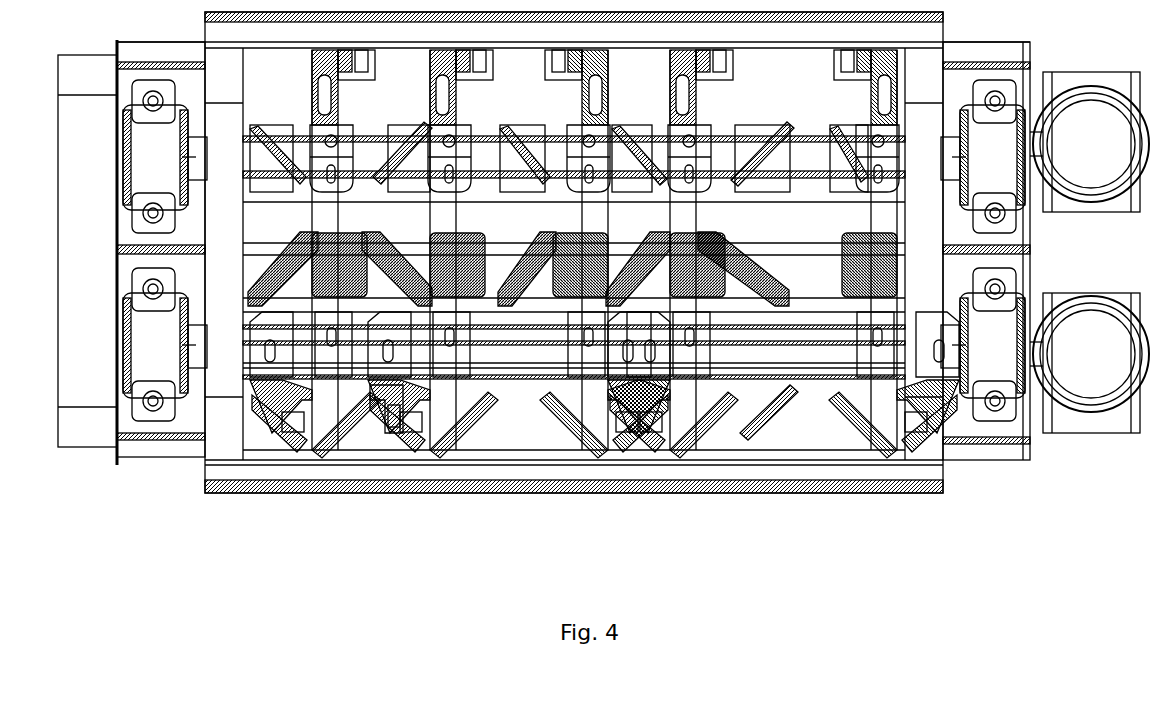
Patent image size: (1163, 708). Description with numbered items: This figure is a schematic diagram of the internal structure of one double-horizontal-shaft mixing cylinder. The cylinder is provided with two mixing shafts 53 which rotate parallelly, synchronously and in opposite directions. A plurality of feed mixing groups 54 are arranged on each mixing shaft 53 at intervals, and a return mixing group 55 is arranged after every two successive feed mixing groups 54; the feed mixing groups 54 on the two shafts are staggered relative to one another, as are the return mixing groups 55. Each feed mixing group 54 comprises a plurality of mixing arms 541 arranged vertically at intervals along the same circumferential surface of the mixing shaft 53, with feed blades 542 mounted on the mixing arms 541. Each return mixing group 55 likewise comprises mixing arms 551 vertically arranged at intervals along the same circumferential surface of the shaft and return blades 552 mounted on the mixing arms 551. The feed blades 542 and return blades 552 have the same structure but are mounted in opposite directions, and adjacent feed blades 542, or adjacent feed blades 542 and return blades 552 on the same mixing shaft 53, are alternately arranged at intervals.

The mixing shaft 53 is at (808, 352).
The feed mixing group 54 is at (272, 442).
The return mixing group 55 is at (412, 439).
The mixing arm 541 is at (622, 438).
The feed blade 542 is at (656, 438).
The mixing arm 551 is at (784, 434).
The return blade 552 is at (748, 436).